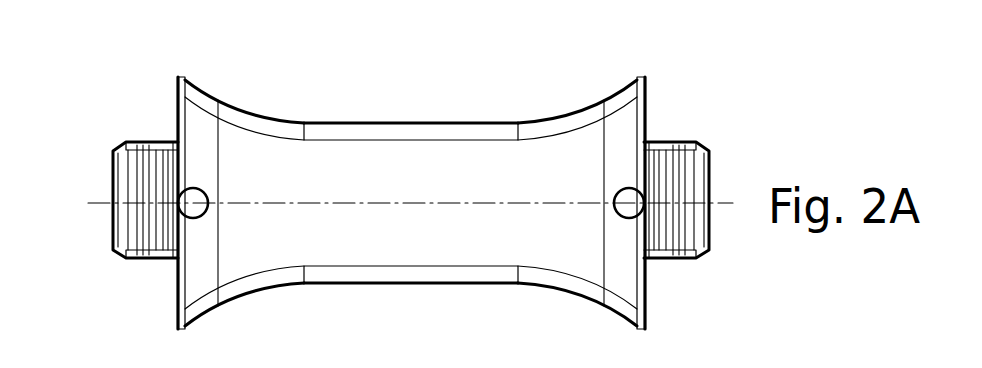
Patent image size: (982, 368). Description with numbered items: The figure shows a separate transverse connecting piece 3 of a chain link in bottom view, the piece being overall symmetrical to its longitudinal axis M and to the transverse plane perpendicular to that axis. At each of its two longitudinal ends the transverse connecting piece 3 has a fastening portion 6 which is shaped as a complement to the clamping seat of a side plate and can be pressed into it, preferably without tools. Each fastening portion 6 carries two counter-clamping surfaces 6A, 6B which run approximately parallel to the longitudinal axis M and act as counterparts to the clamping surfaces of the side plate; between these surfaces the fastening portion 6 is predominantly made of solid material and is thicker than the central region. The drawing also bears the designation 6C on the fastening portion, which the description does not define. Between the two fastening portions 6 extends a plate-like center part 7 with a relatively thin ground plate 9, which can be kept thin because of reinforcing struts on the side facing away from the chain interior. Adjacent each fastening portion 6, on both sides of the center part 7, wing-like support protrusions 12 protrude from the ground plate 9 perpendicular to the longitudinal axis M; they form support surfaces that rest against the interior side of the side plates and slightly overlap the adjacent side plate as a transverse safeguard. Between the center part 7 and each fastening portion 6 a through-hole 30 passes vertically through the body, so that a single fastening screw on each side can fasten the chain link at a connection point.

The transverse connecting piece 3 is at (410, 185).
The fastening portion 6 is at (412, 211).
The counter-clamping surface 6A is at (148, 268).
The counter-clamping surface 6B is at (153, 132).
The nut inner sleeve 6C is at (145, 219).
The plate-like center part 7 is at (518, 295).
The ground plate 9 is at (386, 187).
The support protrusion 12 is at (205, 103).
The through-hole 30 is at (204, 212).
The longitudinal axis M is at (433, 203).